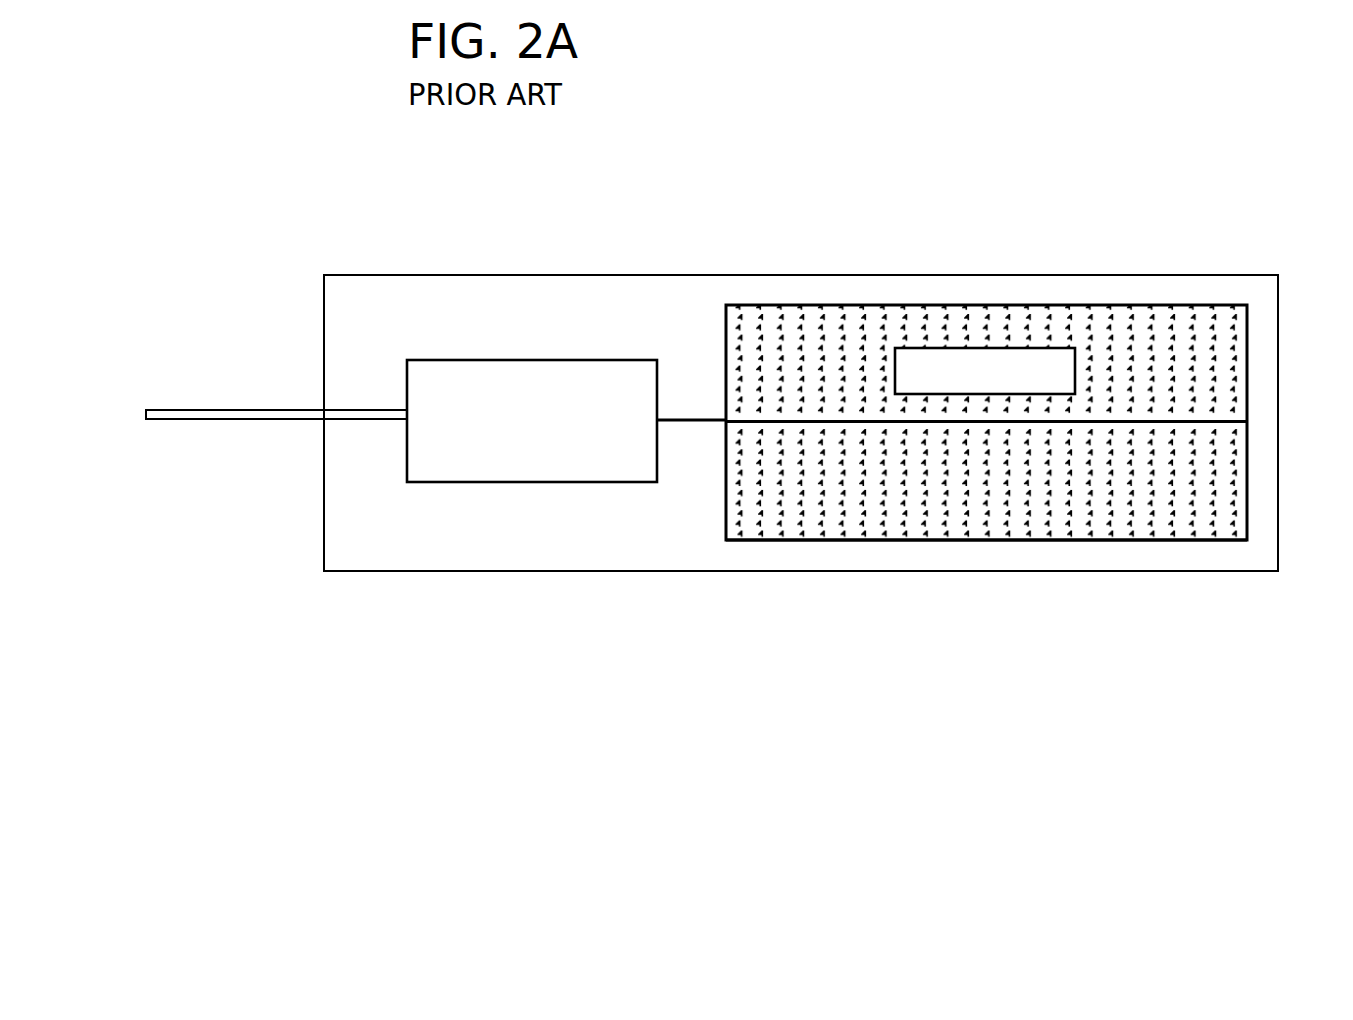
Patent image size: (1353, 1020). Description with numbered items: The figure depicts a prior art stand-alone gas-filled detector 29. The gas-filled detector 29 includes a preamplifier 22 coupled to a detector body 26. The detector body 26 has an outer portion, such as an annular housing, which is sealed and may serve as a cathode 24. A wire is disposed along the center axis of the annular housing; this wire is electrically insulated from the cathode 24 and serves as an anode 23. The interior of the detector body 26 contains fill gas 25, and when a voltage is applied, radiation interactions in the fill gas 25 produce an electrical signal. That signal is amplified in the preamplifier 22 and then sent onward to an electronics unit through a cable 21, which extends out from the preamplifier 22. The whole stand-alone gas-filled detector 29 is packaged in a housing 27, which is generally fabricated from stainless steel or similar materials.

The stand-alone gas-filled detector 29 is at (262, 258).
The housing 27 is at (410, 547).
The cable 21 is at (284, 420).
The preamplifier 22 is at (540, 462).
The detector body 26 is at (938, 304).
The anode 23 is at (1186, 422).
The cathode 24 is at (1133, 538).
The fill gas 25 is at (1058, 382).